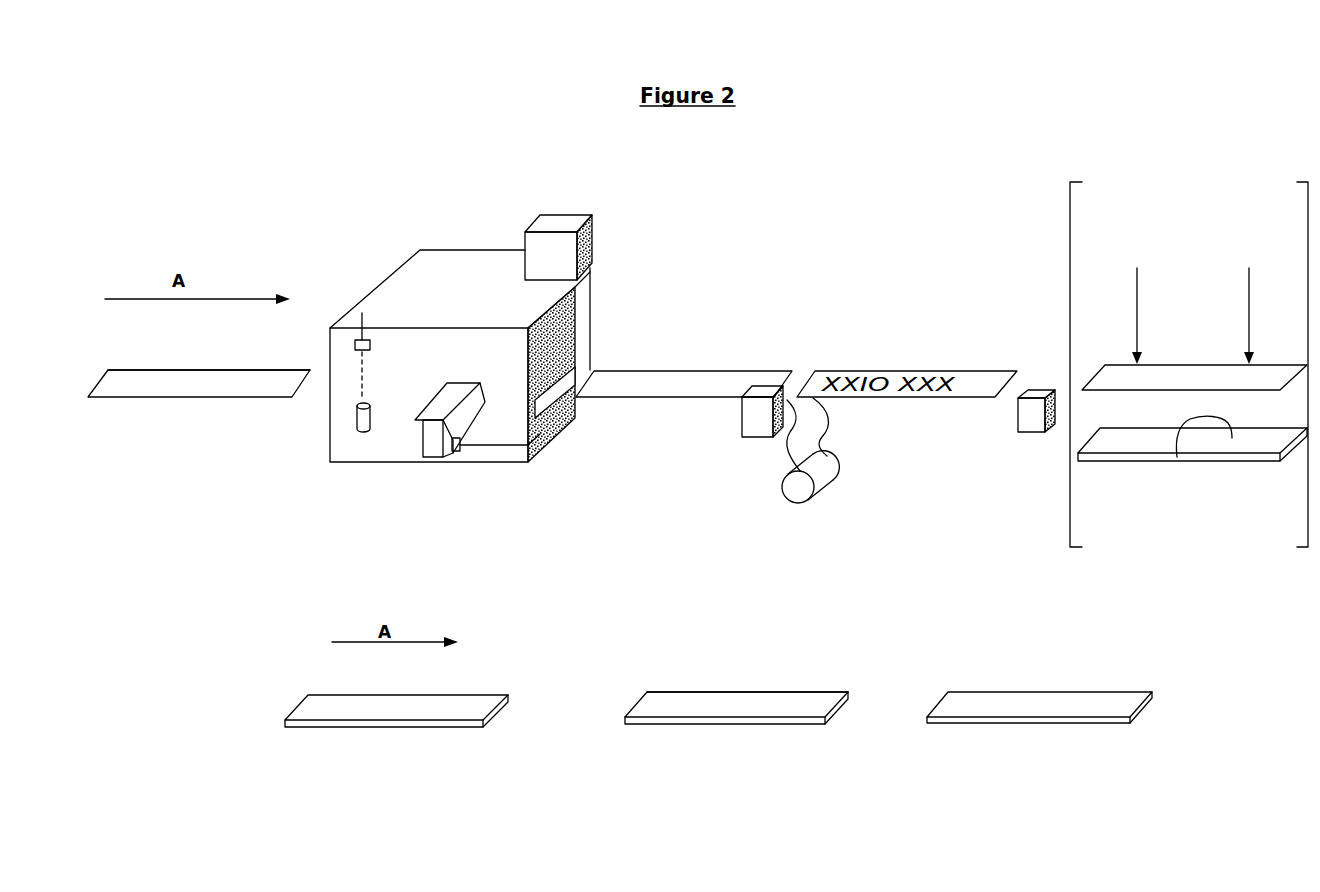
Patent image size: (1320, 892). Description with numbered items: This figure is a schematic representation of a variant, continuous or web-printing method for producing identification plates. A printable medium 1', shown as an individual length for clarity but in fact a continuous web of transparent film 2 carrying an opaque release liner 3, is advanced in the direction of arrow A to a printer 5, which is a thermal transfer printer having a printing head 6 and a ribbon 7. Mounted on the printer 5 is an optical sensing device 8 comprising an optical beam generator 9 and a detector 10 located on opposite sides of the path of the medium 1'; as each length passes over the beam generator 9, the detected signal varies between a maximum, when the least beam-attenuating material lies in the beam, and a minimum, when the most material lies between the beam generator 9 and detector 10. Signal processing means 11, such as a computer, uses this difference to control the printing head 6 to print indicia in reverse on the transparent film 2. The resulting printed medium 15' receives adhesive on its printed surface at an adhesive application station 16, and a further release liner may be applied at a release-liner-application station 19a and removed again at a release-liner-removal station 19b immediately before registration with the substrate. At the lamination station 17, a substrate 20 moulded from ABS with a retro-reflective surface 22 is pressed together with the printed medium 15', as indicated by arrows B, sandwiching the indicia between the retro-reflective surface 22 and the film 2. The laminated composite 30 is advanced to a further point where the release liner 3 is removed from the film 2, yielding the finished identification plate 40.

The printable medium 1' is at (133, 456).
The transparent film 2 is at (205, 400).
The release liner 3 is at (157, 383).
The printer 5 is at (382, 270).
The printing head 6 is at (440, 447).
The ribbon 7 is at (414, 422).
The optical sensing device 8 is at (339, 393).
The optical beam generator 9 is at (360, 420).
The detector 10 is at (357, 337).
The signal processing means 11 is at (557, 225).
The printed medium 15' is at (684, 347).
The adhesive application station 16 is at (760, 428).
The lamination station 17 is at (1201, 215).
The release-liner-application station 19a is at (837, 468).
The release-liner-removal station 19b is at (1032, 422).
The substrate 20 is at (1122, 466).
The retro-reflective surface 22 is at (1177, 457).
The laminated composite 30 is at (365, 736).
The finished identification plate 40 is at (985, 733).